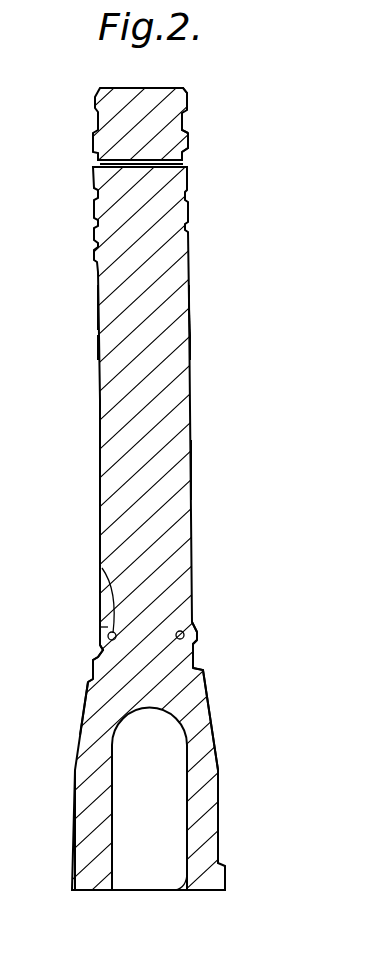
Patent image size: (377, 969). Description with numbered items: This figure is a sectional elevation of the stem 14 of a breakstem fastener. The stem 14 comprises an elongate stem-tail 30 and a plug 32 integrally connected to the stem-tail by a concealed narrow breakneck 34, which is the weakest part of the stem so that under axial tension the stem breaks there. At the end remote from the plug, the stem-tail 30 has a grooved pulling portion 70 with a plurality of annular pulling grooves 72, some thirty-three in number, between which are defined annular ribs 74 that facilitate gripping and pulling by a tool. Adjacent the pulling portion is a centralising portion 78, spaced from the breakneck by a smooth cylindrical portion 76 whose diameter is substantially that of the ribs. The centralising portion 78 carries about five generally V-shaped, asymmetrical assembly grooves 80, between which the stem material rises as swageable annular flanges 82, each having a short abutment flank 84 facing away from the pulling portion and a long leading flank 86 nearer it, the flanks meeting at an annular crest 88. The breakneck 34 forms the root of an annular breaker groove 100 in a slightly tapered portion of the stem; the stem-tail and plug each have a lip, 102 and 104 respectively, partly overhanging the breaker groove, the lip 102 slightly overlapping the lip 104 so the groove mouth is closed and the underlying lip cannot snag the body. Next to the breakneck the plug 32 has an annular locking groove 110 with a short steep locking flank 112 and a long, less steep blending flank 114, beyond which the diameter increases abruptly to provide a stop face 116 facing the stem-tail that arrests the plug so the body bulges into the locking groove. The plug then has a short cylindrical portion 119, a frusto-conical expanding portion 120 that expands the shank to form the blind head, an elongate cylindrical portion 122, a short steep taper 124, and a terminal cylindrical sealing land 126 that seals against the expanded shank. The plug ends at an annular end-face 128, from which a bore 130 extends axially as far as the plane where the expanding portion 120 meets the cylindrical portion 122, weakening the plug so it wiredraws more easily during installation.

The stem 14 is at (76, 96).
The stem-tail 30 is at (194, 516).
The plug 32 is at (201, 690).
The breakneck 34 is at (187, 624).
The pulling portion 70 is at (191, 96).
The pulling grooves 72 is at (189, 117).
The annular ribs 74 is at (190, 142).
The cylindrical portion 76 is at (191, 473).
The centralising portion 78 is at (193, 351).
The assembly grooves 80 is at (192, 311).
The swageable annular flange 82 is at (193, 300).
The abutment flank 84 is at (96, 312).
The leading flank 86 is at (96, 302).
The annular crest 88 is at (98, 348).
The breaker groove 100 is at (102, 568).
The lip of the stem-tail 102 is at (100, 627).
The lip of the plug 104 is at (195, 640).
The locking groove 110 is at (194, 653).
The locking flank 112 is at (100, 645).
The blending flank 114 is at (98, 655).
The stop face 116 is at (92, 676).
The short cylindrical portion 119 is at (86, 680).
The expanding portion 120 is at (80, 731).
The elongate cylindrical portion 122 is at (76, 792).
The steep taper 124 is at (74, 866).
The sealing land 126 is at (73, 878).
The end-face 128 is at (92, 892).
The bore 130 is at (183, 873).